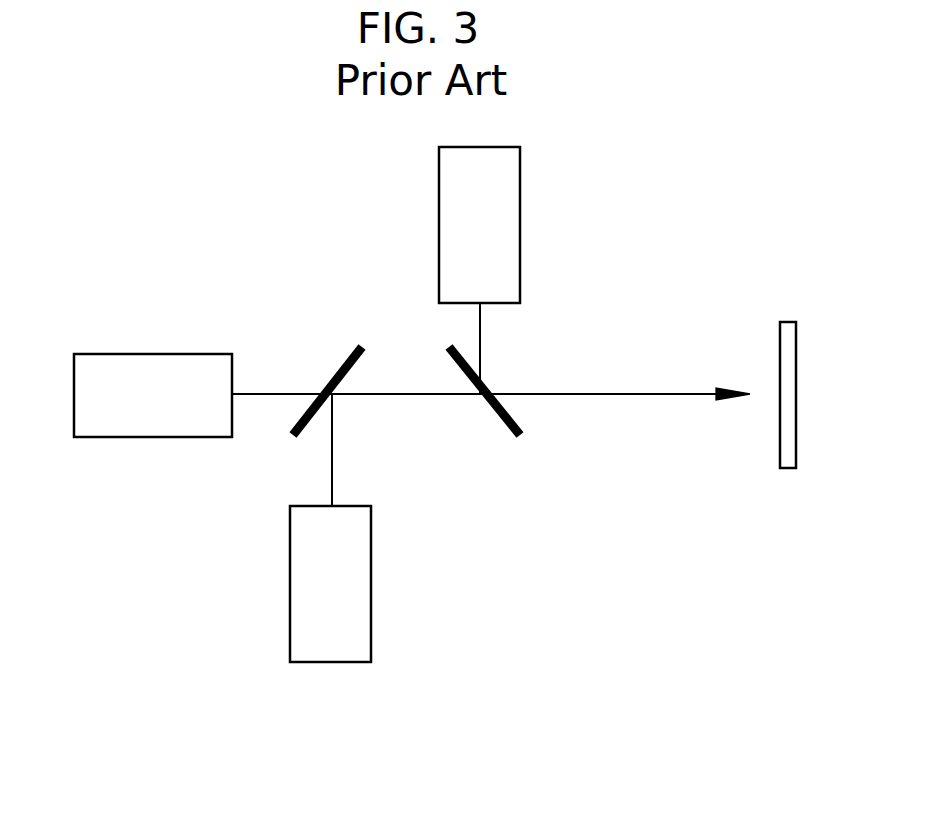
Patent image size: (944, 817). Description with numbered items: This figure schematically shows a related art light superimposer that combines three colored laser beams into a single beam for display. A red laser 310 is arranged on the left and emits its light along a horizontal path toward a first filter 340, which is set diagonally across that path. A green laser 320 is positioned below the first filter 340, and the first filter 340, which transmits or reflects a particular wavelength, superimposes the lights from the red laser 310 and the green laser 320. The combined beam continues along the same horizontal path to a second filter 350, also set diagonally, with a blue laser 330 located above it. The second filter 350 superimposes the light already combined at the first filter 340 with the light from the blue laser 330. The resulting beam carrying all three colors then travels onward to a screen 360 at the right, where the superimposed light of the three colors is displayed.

The red laser 310 is at (150, 424).
The green laser 320 is at (353, 588).
The blue laser 330 is at (510, 173).
The first filter 340 is at (342, 355).
The second filter 350 is at (500, 428).
The screen 360 is at (789, 325).